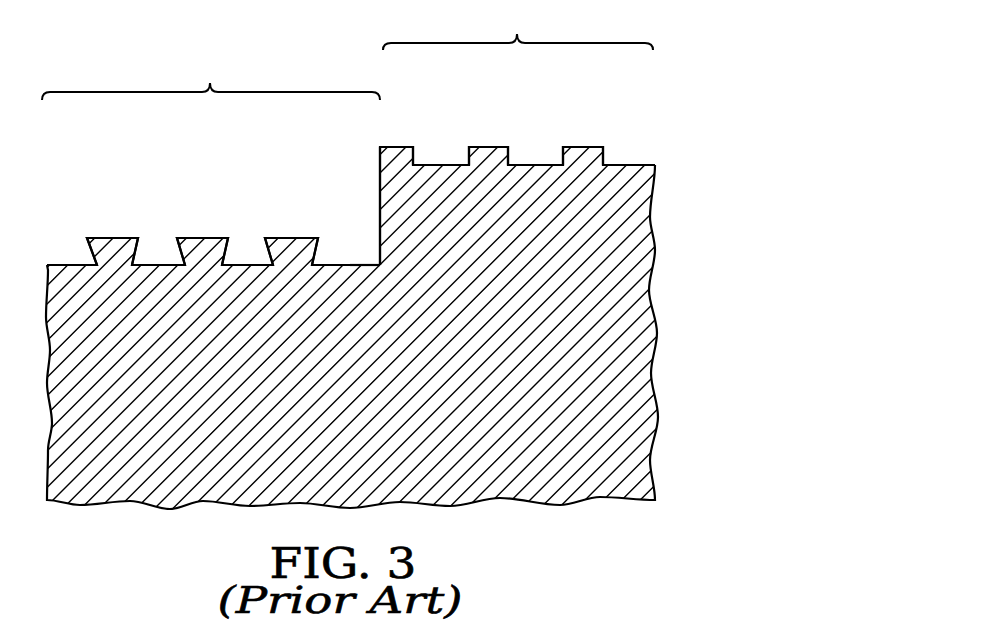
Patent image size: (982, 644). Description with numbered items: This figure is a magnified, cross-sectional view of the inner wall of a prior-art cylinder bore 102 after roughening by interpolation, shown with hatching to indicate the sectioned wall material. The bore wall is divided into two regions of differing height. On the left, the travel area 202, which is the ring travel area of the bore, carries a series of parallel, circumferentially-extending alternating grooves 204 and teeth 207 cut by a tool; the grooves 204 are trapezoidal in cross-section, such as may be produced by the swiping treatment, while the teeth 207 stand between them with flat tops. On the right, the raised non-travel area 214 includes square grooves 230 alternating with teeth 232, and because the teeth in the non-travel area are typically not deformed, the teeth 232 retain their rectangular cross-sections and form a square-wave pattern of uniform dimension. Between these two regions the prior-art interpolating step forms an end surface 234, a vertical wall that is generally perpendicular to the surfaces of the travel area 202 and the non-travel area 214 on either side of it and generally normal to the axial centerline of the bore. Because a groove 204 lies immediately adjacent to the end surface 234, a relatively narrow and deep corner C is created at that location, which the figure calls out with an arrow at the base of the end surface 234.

The substrate 102 is at (654, 166).
The travel area 202 is at (211, 160).
The non-travel area 214 is at (517, 137).
The teeth 207 is at (113, 238).
The grooves 204 is at (157, 265).
The end surface 234 is at (378, 178).
The corner C is at (378, 263).
The teeth 232 is at (397, 147).
The square grooves 230 is at (440, 165).